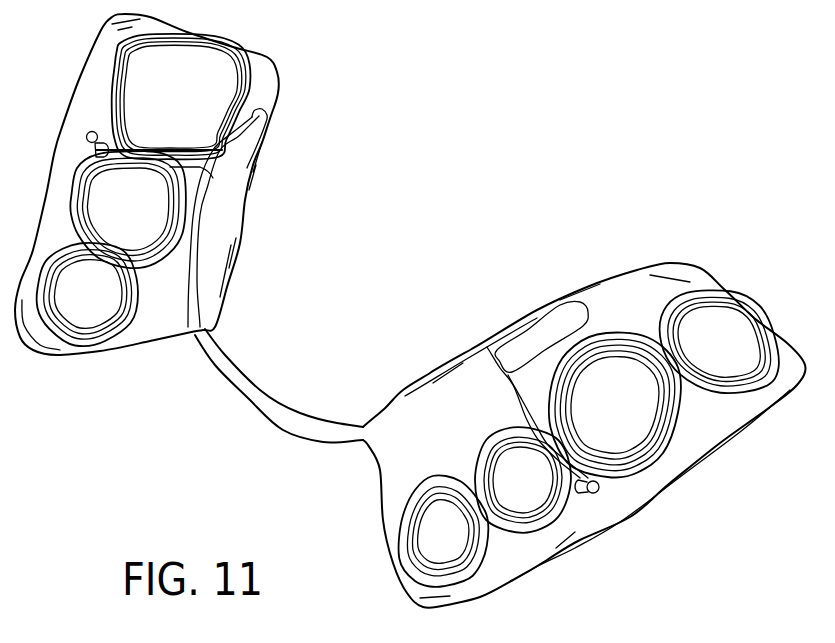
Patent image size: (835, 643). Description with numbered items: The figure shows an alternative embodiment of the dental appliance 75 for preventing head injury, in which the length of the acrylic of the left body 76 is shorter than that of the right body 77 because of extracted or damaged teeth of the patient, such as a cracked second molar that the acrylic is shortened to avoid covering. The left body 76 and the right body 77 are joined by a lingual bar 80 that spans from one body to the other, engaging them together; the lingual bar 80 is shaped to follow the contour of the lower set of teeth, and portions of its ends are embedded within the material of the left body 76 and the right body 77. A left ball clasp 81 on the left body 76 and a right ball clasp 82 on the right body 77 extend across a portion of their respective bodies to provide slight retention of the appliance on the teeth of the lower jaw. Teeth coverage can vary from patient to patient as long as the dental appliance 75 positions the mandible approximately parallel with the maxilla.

The dental appliance 75 is at (422, 138).
The left body 76 is at (87, 59).
The right body 77 is at (733, 430).
The lingual bar 80 is at (307, 442).
The left ball clasp 81 is at (87, 137).
The right ball clasp 82 is at (598, 494).